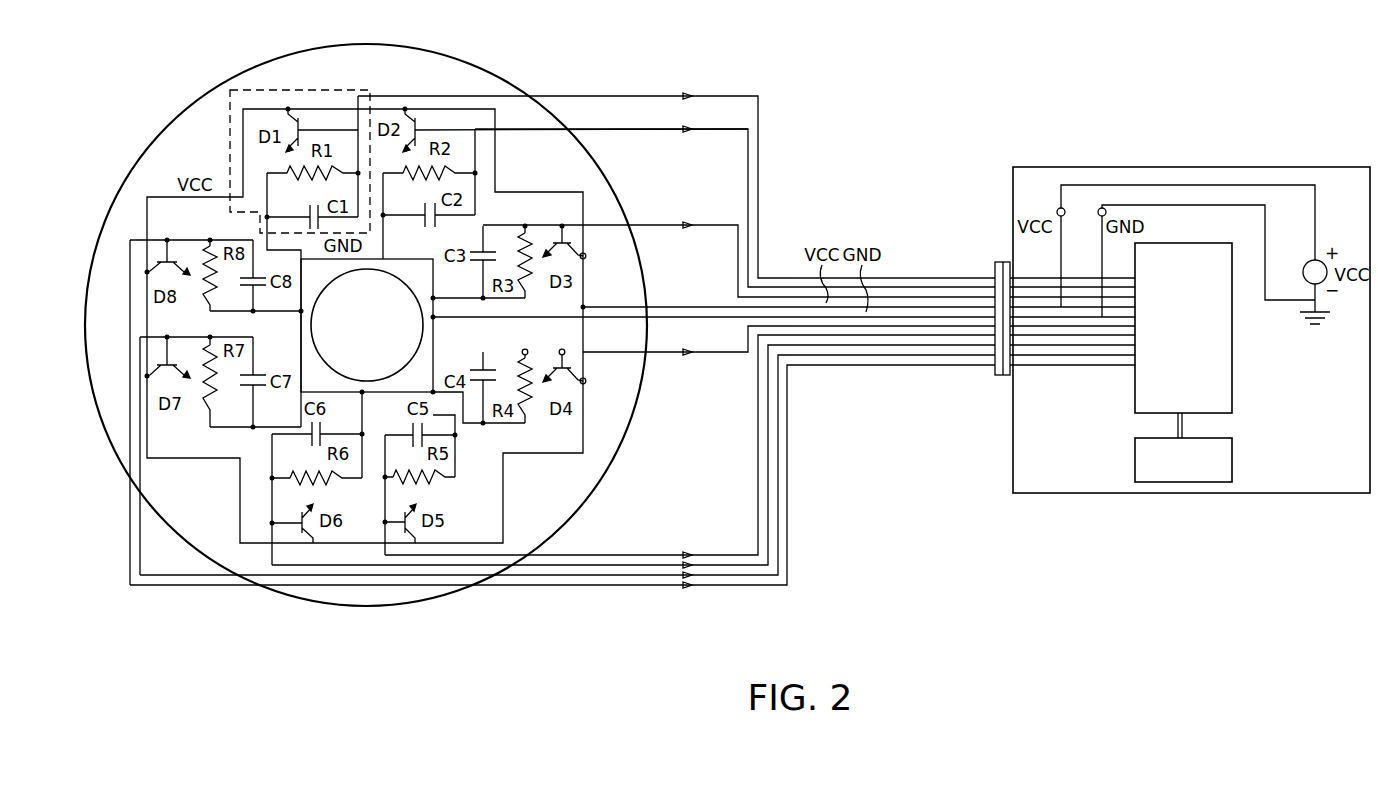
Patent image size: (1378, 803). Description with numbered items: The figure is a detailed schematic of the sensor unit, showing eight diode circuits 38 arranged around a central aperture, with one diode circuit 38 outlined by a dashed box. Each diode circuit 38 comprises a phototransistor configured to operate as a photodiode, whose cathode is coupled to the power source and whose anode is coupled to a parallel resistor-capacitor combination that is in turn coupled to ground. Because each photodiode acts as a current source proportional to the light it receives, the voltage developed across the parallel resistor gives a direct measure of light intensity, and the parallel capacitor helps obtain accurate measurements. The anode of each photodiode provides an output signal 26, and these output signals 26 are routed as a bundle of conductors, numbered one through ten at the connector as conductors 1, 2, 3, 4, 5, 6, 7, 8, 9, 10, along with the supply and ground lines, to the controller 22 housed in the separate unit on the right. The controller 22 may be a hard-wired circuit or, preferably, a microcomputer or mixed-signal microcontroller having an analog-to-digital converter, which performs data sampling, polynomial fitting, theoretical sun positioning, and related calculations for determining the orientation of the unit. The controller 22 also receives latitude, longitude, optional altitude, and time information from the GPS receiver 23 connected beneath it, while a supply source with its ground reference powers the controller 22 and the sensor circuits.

The connector conductor 1 is at (984, 277).
The connector conductor 2 is at (968, 286).
The connector conductor 3 is at (952, 296).
The connector conductor 4 is at (912, 330).
The connector conductor 5 is at (932, 336).
The connector conductor 6 is at (952, 346).
The connector conductor 7 is at (968, 356).
The connector conductor 8 is at (984, 366).
The connector conductor 9 is at (934, 310).
The connector conductor 10 is at (914, 310).
The controller 22 is at (1183, 328).
The GPS receiver 23 is at (1232, 458).
The output signal 26 is at (688, 131).
The diode circuit 38 is at (275, 90).